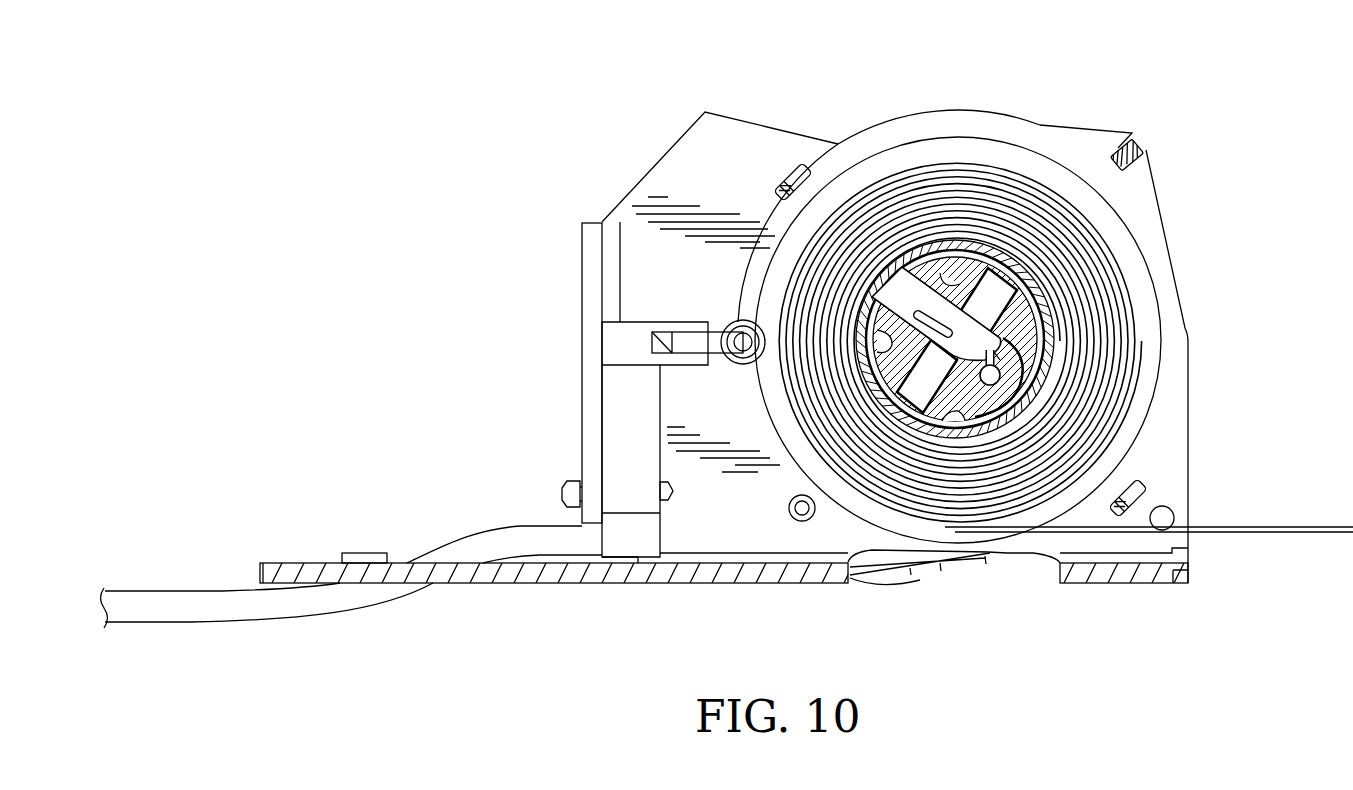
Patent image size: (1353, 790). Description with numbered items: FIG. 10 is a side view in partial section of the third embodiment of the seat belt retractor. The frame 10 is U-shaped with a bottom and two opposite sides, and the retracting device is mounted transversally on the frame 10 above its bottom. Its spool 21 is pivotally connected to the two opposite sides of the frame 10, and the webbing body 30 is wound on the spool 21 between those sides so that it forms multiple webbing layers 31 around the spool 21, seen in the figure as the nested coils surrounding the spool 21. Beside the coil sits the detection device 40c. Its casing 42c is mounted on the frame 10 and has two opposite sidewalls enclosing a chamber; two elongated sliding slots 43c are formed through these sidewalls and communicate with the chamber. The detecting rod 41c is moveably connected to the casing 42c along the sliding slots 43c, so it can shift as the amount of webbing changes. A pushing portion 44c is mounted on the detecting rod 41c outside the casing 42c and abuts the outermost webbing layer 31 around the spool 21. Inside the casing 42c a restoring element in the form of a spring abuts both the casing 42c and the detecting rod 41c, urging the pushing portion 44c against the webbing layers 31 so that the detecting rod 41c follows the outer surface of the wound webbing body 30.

The frame 10 is at (668, 175).
The spool 21 is at (1050, 343).
The webbing body 30 is at (1031, 157).
The webbing layers 31 is at (1123, 265).
The detection device 40c is at (690, 505).
The detecting rod 41c is at (688, 306).
The casing 42c is at (620, 448).
The sliding slots 43c is at (652, 342).
The pushing portion 44c is at (744, 320).